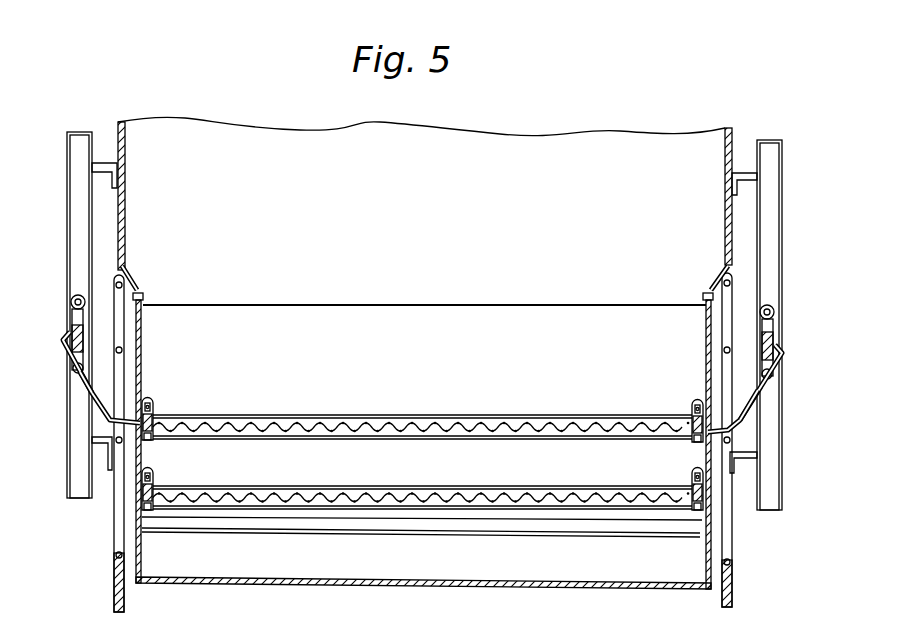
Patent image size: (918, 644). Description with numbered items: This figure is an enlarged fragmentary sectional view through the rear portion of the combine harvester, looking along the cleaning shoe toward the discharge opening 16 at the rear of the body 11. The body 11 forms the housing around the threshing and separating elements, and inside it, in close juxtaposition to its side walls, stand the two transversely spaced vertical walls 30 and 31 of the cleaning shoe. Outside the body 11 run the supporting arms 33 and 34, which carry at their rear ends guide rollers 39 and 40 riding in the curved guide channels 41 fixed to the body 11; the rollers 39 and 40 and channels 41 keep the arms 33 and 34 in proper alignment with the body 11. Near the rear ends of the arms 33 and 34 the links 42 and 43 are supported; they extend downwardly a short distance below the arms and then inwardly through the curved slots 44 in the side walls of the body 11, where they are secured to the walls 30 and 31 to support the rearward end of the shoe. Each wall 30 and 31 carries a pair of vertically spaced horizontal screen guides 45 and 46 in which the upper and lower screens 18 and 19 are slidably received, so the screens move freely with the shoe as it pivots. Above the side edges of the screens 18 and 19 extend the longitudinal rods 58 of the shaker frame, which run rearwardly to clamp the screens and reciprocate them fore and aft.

The body 11 is at (124, 221).
The discharge opening 16 is at (432, 304).
The upper screen 18 is at (421, 418).
The lower screen 19 is at (406, 500).
The wall 30 is at (141, 368).
The wall 31 is at (706, 368).
The supporting arm 33 is at (72, 333).
The supporting arm 34 is at (775, 341).
The guide roller 39 is at (75, 298).
The guide roller 40 is at (70, 372).
The guide channel 41 is at (88, 133).
The link 42 is at (88, 393).
The link 43 is at (775, 415).
The curved slot 44 is at (123, 334).
The screen guide 45 is at (153, 405).
The screen guide 46 is at (153, 473).
The rod 58 is at (158, 409).